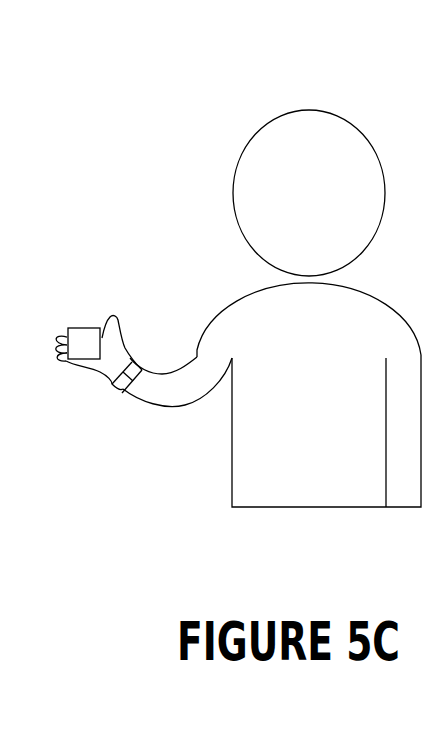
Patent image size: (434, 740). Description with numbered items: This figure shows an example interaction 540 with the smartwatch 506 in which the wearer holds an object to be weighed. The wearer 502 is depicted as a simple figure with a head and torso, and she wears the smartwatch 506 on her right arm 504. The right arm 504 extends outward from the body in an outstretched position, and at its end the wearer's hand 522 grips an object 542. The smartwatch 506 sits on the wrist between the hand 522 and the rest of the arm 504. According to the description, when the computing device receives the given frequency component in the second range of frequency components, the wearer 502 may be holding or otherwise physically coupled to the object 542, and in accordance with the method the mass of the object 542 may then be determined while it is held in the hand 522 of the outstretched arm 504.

The user wearing wearable device 540 is at (177, 108).
The wearer 502 is at (309, 110).
The right arm 504 is at (178, 360).
The hand 522 is at (65, 333).
The object 542 is at (72, 328).
The smartwatch 506 is at (112, 385).